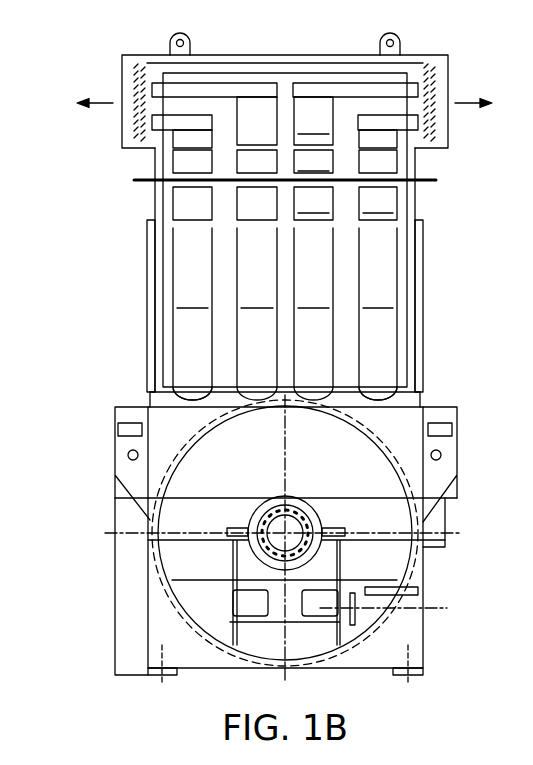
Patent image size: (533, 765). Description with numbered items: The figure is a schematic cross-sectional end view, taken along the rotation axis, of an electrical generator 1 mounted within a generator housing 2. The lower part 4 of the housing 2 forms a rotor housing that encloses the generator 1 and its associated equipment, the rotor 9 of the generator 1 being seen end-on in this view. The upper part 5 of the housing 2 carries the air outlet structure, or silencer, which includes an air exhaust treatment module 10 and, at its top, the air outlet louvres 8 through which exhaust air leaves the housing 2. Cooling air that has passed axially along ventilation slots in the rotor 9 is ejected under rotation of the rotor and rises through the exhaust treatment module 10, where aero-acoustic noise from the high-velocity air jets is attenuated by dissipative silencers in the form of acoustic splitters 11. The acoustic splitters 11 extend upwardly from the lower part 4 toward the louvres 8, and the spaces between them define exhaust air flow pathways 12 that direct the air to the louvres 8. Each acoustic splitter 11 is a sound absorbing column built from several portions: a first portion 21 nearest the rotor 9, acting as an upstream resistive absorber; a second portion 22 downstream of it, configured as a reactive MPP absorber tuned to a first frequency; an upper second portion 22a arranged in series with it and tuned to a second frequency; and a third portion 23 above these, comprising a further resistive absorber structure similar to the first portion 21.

The electrical generator 1 is at (253, 543).
The generator housing 2 is at (147, 286).
The lower part of the housing 4 is at (143, 468).
The upper part of the housing 5 is at (147, 244).
The air outlet louvres 8 is at (135, 78).
The rotor 9 is at (273, 510).
The air exhaust treatment module 10 is at (190, 330).
The acoustic splitters 11 is at (285, 209).
The exhaust air flow pathways 12 is at (223, 368).
The first portion 21 is at (397, 253).
The second portion 22 is at (253, 202).
The upper second portion 22a is at (250, 162).
The third portion 23 is at (387, 137).